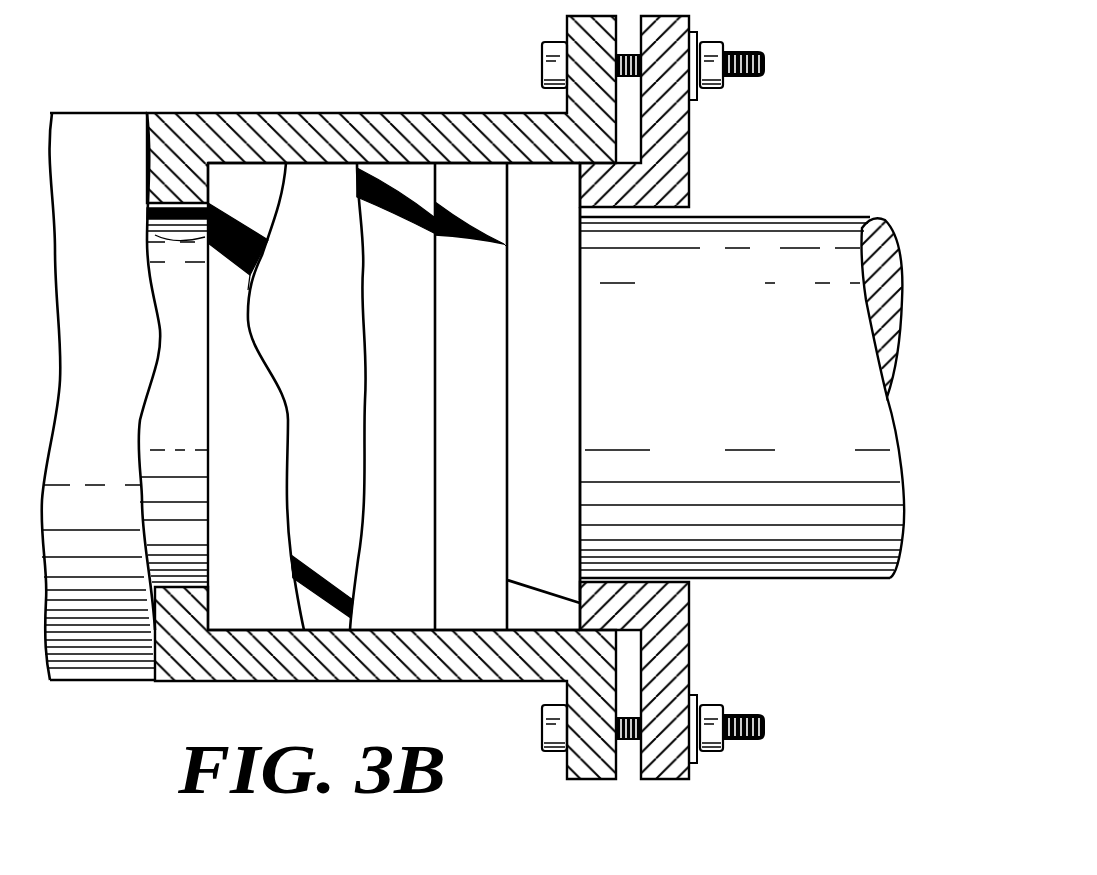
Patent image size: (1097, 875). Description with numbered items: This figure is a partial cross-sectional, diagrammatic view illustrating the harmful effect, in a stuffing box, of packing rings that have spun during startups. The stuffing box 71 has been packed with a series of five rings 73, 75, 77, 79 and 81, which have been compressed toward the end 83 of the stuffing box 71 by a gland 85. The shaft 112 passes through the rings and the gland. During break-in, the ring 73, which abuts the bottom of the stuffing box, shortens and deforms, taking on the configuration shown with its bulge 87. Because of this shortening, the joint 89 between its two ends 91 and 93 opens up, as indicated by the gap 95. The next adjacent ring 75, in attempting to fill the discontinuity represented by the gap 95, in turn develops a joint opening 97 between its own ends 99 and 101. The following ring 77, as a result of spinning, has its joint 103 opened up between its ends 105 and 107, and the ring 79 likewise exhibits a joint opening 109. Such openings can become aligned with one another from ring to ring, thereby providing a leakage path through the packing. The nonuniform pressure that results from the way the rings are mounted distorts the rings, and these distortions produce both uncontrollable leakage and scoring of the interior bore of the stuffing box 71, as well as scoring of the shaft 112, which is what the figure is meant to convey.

The stuffing box 71 is at (603, 150).
The ring 73 is at (256, 396).
The ring 75 is at (394, 396).
The ring 77 is at (411, 396).
The ring 79 is at (483, 396).
The ring 81 is at (543, 396).
The end 83 is at (101, 396).
The gland 85 is at (664, 661).
The bulge 87 is at (314, 554).
The joint 89 is at (147, 230).
The end 91 is at (252, 272).
The end 93 is at (257, 228).
The gap 95 is at (214, 263).
The joint opening 97 is at (378, 553).
The end 99 is at (373, 571).
The end 101 is at (293, 598).
The joint 103 is at (357, 182).
The end 105 is at (398, 210).
The end 107 is at (396, 218).
The joint opening 109 is at (467, 226).
The shaft 112 is at (698, 403).